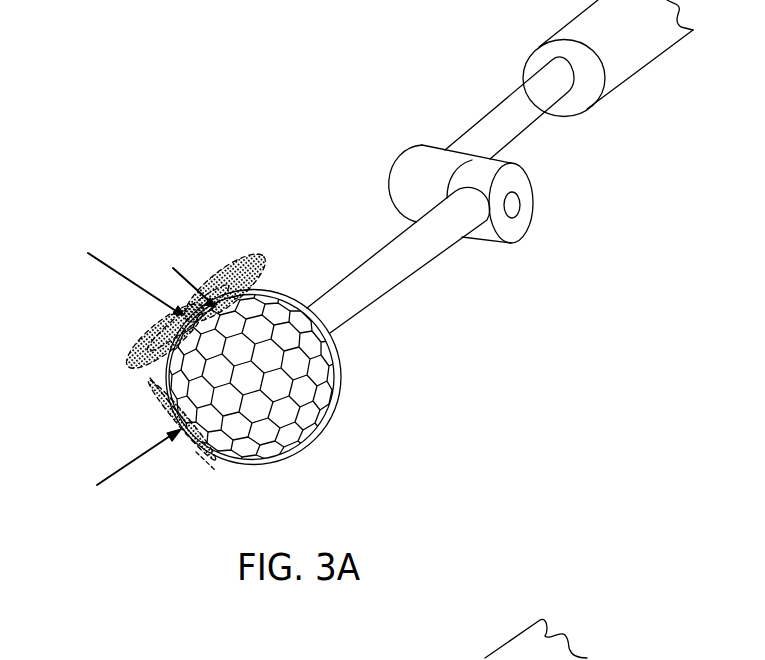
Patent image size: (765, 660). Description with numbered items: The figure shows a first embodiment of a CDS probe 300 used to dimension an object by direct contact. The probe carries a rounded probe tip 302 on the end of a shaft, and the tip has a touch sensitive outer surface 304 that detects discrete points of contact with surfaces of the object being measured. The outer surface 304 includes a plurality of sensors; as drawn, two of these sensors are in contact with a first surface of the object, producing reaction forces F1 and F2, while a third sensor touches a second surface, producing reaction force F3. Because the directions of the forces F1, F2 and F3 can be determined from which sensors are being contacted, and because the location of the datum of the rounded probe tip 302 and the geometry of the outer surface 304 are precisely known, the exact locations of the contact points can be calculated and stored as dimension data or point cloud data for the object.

The CDS probe 300 is at (138, 30).
The rounded probe tip 302 is at (397, 438).
The touch sensitive outer surface 304 is at (293, 453).
The reaction force F1 is at (184, 272).
The reaction force F2 is at (123, 272).
The reaction force F3 is at (123, 469).